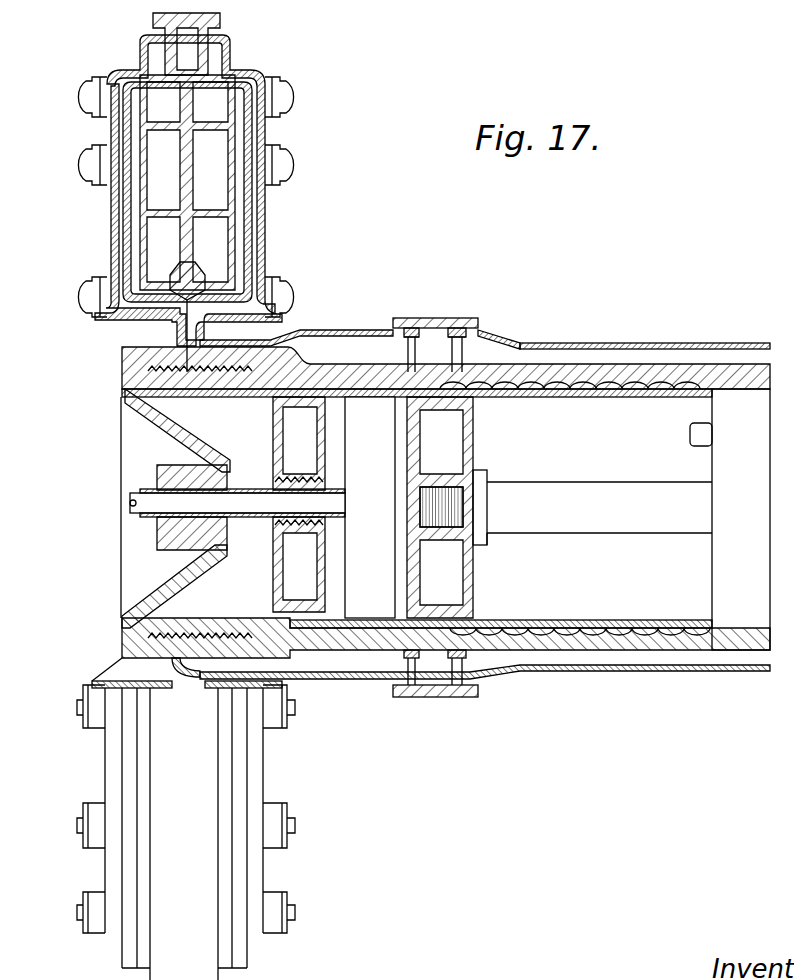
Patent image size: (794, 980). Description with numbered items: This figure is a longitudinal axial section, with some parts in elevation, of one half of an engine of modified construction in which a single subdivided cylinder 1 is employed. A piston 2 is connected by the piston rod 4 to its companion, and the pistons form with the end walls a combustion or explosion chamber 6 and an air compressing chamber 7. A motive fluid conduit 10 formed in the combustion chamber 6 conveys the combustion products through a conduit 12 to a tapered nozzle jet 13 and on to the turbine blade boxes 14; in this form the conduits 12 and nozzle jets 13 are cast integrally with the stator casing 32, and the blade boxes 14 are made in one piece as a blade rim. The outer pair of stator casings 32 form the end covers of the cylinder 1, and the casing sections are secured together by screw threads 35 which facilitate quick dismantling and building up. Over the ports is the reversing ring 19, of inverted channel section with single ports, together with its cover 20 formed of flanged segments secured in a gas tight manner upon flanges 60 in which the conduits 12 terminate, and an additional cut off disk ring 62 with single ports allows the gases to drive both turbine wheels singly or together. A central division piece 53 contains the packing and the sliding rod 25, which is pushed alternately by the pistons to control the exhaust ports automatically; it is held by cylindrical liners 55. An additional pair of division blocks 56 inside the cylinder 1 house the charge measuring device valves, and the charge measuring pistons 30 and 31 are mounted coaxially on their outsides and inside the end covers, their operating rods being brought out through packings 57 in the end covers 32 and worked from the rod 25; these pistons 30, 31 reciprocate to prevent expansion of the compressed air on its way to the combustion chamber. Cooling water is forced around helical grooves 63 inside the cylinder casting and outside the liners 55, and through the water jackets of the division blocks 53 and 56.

The cylinder 1 is at (622, 645).
The piston 2 is at (470, 463).
The piston rod 4 is at (592, 507).
The combustion chamber 6 is at (403, 588).
The air compressing chamber 7 is at (531, 561).
The motive fluid conduit 10 is at (432, 378).
The conduit 12 is at (316, 336).
The nozzle jet 13 is at (116, 121).
The turbine blade box 14 is at (187, 157).
The reversing ring 19 is at (464, 334).
The cover ring 20 is at (444, 328).
The sliding rod 25 is at (690, 437).
The charge measuring piston 30 is at (280, 434).
The charge measuring piston 31 is at (280, 537).
The stator casing 32 is at (112, 232).
The screw thread 35 is at (140, 366).
The central division piece 53 is at (741, 519).
The cylindrical liner 55 is at (566, 397).
The division block 56 is at (370, 507).
The packing 57 is at (150, 542).
The flange 60 is at (498, 341).
The cut off disk ring 62 is at (552, 343).
The helical groove 63 is at (555, 634).